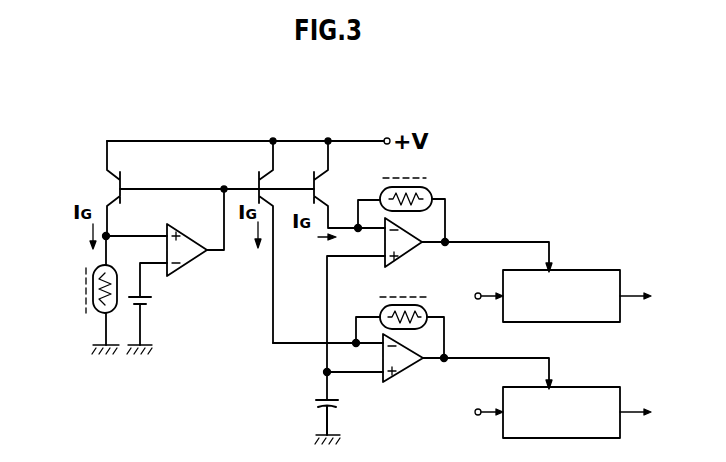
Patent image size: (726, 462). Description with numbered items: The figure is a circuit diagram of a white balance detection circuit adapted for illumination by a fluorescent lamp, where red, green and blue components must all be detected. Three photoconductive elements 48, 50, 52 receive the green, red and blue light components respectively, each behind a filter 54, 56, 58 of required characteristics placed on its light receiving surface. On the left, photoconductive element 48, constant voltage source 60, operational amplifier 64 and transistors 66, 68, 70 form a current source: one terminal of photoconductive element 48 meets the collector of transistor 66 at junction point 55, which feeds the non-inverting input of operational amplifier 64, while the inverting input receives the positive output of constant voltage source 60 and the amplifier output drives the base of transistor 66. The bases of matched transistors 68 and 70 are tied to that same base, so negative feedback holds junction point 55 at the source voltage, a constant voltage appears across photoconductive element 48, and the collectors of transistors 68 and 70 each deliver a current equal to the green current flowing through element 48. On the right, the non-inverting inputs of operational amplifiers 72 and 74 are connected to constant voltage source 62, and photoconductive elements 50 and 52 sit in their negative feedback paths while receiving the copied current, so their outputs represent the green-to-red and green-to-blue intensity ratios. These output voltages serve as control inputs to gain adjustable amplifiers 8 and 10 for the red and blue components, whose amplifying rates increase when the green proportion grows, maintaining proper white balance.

The photoconductive element 48 is at (93, 314).
The filter 54 is at (86, 284).
The junction point 55 is at (108, 234).
The constant voltage source 60 is at (142, 305).
The constant voltage source 62 is at (324, 396).
The operational amplifier 64 is at (184, 236).
The transistor 66 is at (105, 185).
The transistor 68 is at (312, 185).
The transistor 70 is at (256, 185).
The photoconductive element 50 is at (430, 190).
The filter 56 is at (425, 178).
The photoconductive element 52 is at (378, 307).
The filter 58 is at (398, 297).
The operational amplifier 72 is at (413, 257).
The operational amplifier 74 is at (404, 374).
The gain adjustable amplifier 8 is at (580, 270).
The gain adjustable amplifier 10 is at (585, 387).